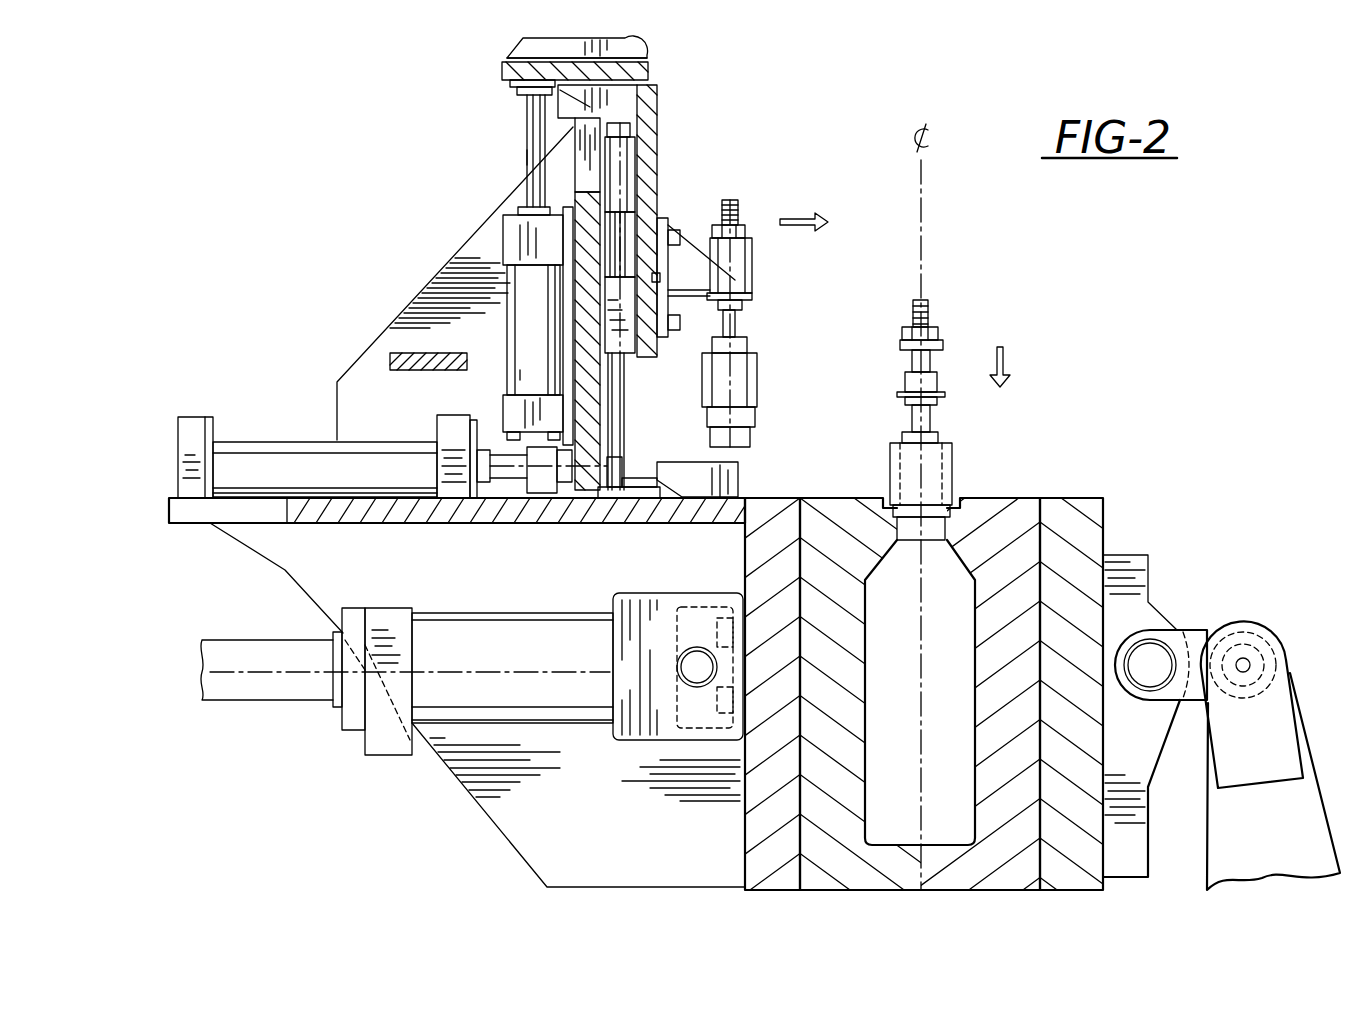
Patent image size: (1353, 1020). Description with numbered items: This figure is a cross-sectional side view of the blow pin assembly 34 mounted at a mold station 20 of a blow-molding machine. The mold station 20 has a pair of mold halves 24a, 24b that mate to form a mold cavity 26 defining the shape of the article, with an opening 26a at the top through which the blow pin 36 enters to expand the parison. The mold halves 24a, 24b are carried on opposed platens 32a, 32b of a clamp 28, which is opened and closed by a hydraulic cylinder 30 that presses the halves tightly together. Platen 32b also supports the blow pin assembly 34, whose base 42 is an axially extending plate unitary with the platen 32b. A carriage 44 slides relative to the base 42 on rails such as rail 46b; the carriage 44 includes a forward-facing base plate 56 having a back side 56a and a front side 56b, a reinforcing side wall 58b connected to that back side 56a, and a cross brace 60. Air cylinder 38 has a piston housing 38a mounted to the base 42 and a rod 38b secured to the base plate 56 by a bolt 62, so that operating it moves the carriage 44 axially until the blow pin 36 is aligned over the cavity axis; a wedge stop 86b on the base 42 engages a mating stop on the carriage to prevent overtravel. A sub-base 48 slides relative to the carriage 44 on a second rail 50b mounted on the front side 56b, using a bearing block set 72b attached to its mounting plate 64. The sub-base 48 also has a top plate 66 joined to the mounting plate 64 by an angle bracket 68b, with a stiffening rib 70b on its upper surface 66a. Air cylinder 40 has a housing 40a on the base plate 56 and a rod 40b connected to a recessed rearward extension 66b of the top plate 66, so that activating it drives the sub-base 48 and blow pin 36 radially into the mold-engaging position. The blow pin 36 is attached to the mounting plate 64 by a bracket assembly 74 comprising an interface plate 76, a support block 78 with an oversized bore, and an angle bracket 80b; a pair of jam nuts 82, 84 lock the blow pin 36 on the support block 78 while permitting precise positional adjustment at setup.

The mold station 20 is at (915, 584).
The mold half 24a is at (1030, 498).
The mold half 24b is at (847, 498).
The mold cavity 26 is at (868, 682).
The opening 26a is at (959, 466).
The clamp 28 is at (1248, 530).
The hydraulic cylinder 30 is at (557, 725).
The platen 32a is at (1127, 498).
The platen 32b is at (745, 856).
The blow pin assembly 34 is at (486, 341).
The blow pin 36 is at (757, 400).
The air cylinder 38 is at (390, 458).
The piston housing 38a is at (290, 460).
The rod 38b is at (528, 498).
The air cylinder 40 is at (449, 327).
The housing 40a is at (447, 391).
The rod 40b is at (527, 158).
The base 42 is at (396, 516).
The carriage 44 is at (430, 265).
The rail 46b is at (640, 523).
The sub-base 48 is at (645, 261).
The rail 50b is at (706, 380).
The base plate 56 is at (454, 160).
The back side 56a is at (528, 178).
The front side 56b is at (600, 420).
The side wall 58b is at (441, 263).
The cross brace 60 is at (390, 362).
The bolt 62 is at (625, 462).
The mounting plate 64 is at (658, 100).
The top plate 66 is at (650, 73).
The upper surface 66a is at (615, 40).
The rearward extension 66b is at (510, 80).
The angle bracket 68b is at (533, 148).
The stiffening rib 70b is at (530, 37).
The bearing block set 72b is at (600, 162).
The bracket assembly 74 is at (792, 262).
The interface plate 76 is at (748, 340).
The support block 78 is at (754, 262).
The angle bracket 80b is at (688, 247).
The jam nut 82 is at (746, 228).
The jam nut 84 is at (752, 297).
The wedge stop 86b is at (738, 470).